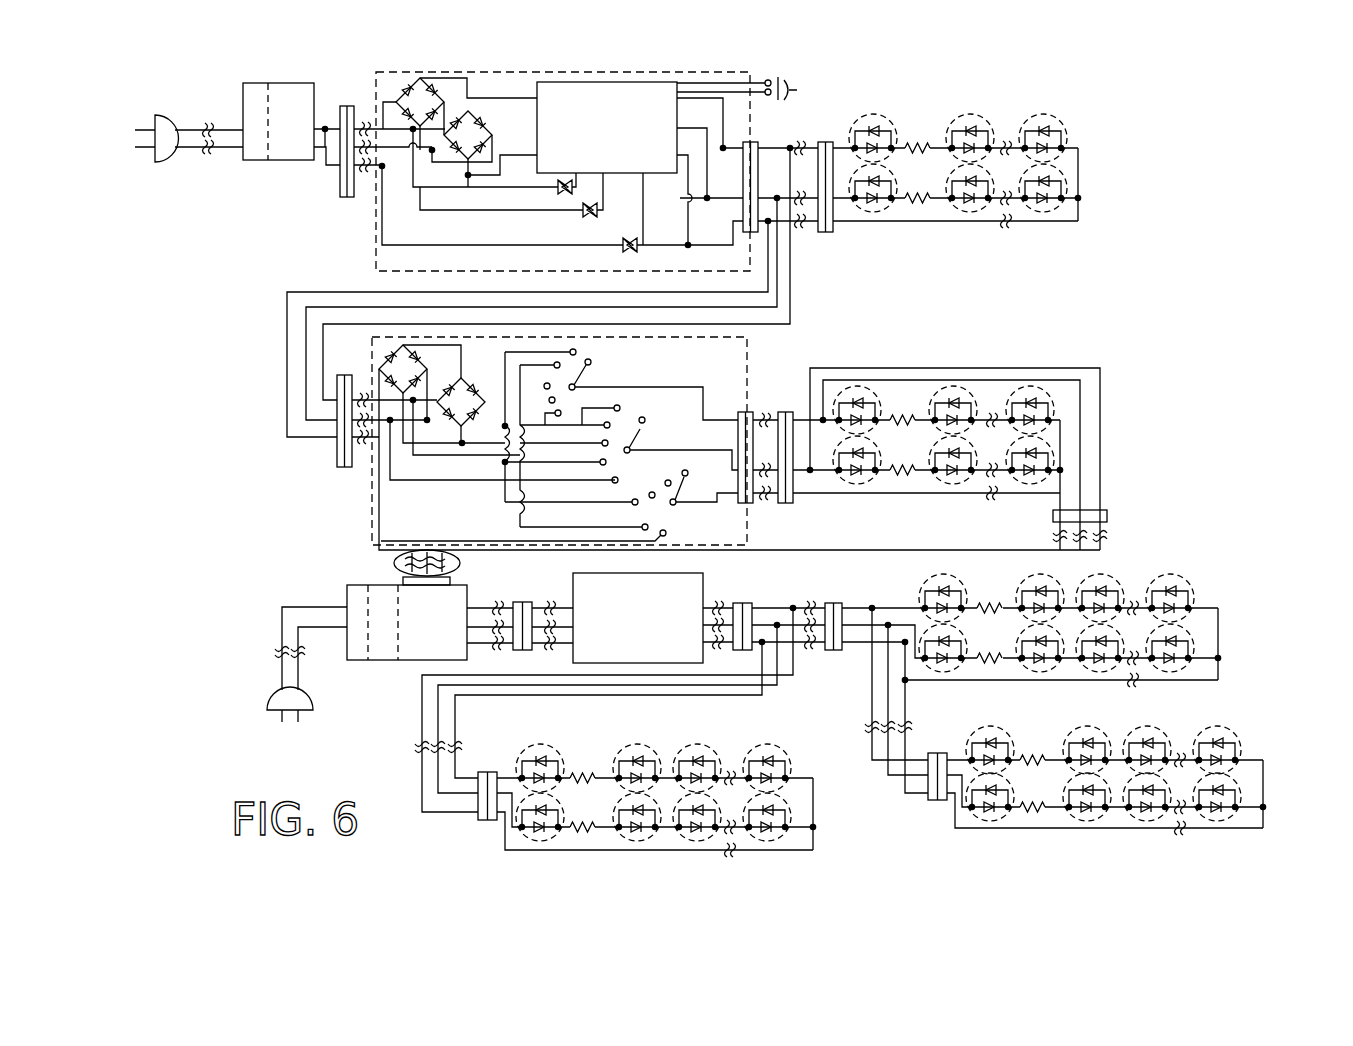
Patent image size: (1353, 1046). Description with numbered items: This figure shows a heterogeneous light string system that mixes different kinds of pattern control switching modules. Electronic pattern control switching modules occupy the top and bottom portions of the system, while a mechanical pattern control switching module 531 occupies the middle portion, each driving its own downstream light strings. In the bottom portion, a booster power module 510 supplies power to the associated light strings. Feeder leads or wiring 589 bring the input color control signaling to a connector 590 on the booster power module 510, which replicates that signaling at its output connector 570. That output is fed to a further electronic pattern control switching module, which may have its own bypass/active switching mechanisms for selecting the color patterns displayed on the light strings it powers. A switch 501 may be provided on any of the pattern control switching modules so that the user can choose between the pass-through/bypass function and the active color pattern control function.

The switch 501 is at (797, 90).
The mechanical pattern control switching module 531 is at (747, 360).
The connector 590 is at (398, 554).
The feeder leads 589 is at (395, 563).
The booster power module 510 is at (467, 592).
The output connector 570 is at (528, 650).